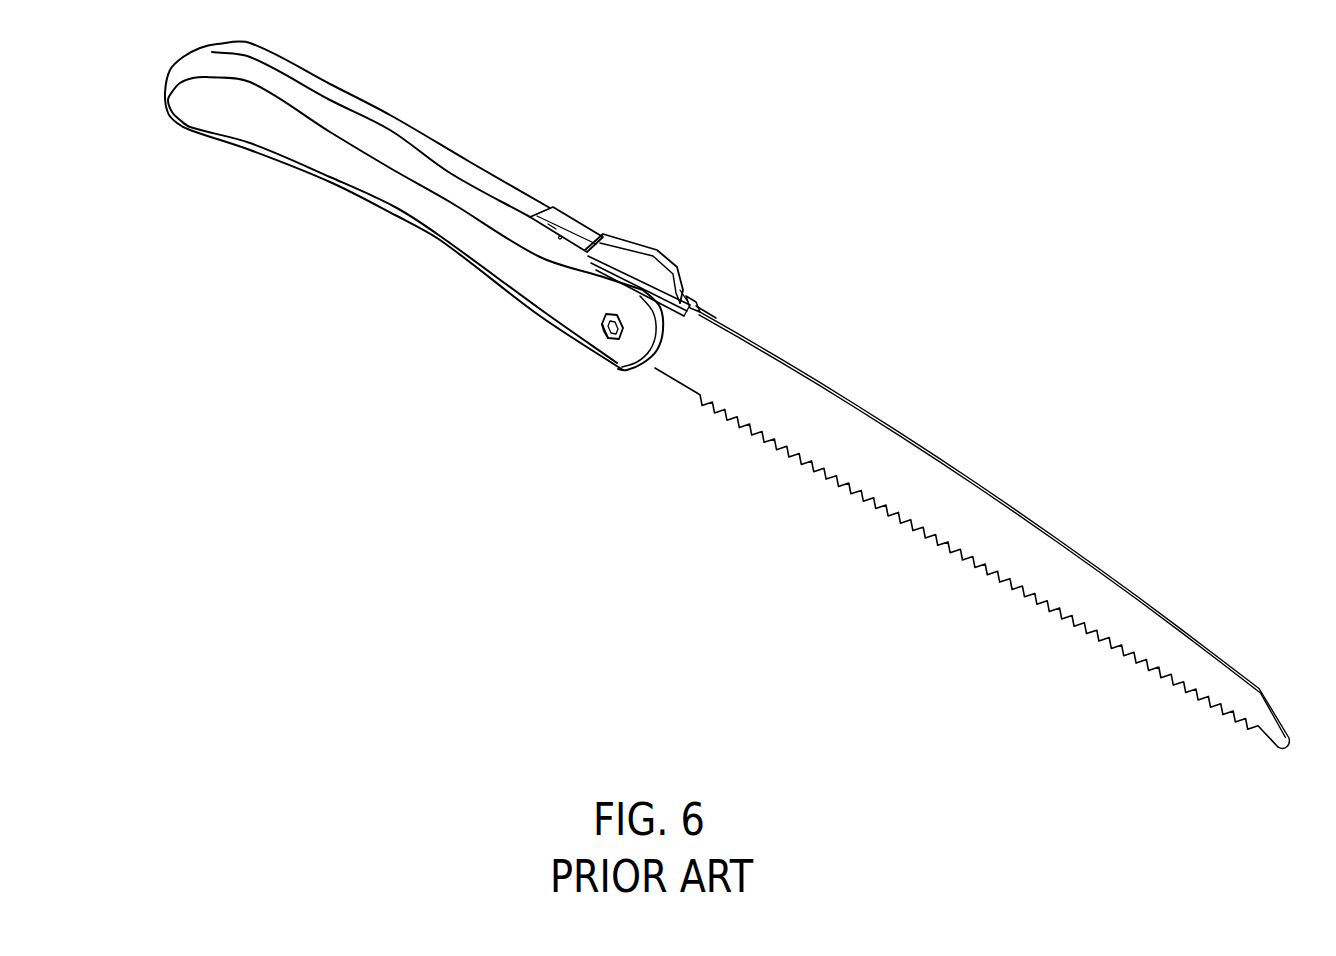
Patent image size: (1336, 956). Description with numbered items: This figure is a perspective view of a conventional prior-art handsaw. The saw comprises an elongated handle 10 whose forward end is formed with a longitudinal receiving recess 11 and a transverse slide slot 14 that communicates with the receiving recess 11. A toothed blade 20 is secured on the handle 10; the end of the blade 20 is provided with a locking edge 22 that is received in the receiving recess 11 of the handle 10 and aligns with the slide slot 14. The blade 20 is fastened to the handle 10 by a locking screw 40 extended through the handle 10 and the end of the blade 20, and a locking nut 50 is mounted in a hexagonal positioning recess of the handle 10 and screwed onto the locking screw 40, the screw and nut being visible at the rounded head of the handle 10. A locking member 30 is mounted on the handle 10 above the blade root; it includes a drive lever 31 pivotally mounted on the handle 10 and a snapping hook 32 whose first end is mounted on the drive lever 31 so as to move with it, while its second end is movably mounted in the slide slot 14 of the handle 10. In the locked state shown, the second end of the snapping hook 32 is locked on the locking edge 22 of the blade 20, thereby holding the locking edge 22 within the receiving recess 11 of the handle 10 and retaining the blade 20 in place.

The handle 10 is at (461, 152).
The drive lever 31 is at (574, 208).
The locking member 30 is at (606, 228).
The snapping hook 32 is at (663, 257).
The transverse slide slot 14 is at (763, 279).
The locking edge 22 is at (697, 300).
The longitudinal receiving recess 11 is at (713, 313).
The blade 20 is at (942, 452).
The locking screw 40 is at (547, 375).
The locking nut 50 is at (600, 337).